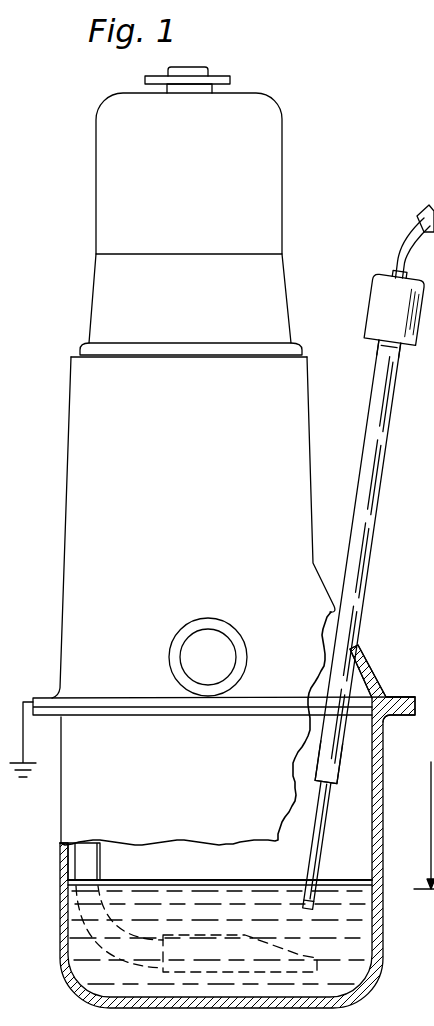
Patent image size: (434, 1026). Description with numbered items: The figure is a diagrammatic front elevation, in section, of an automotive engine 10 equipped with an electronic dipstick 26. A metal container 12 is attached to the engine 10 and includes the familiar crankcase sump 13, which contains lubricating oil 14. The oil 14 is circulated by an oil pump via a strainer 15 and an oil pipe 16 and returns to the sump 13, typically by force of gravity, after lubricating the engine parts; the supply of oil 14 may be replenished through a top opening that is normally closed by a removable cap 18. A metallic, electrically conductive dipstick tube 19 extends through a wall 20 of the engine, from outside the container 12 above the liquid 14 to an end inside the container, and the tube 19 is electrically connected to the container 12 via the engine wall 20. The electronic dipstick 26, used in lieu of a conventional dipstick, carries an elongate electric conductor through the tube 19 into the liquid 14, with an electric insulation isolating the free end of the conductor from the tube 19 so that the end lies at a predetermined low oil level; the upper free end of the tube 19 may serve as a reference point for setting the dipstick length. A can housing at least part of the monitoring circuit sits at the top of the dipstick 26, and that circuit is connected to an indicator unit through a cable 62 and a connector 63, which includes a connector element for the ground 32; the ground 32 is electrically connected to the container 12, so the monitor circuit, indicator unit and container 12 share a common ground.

The automotive engine 10 is at (70, 450).
The metal container 12 is at (61, 912).
The crankcase sump 13 is at (350, 879).
The lubricating oil 14 is at (355, 919).
The strainer 15 is at (319, 961).
The oil pipe 16 is at (126, 924).
The removable cap 18 is at (215, 77).
The dipstick tube 19 is at (374, 570).
The engine wall 20 is at (366, 672).
The electronic dipstick 26 is at (308, 810).
The ground terminal 32 is at (24, 742).
The cable 62 is at (401, 243).
The connector 63 is at (428, 208).